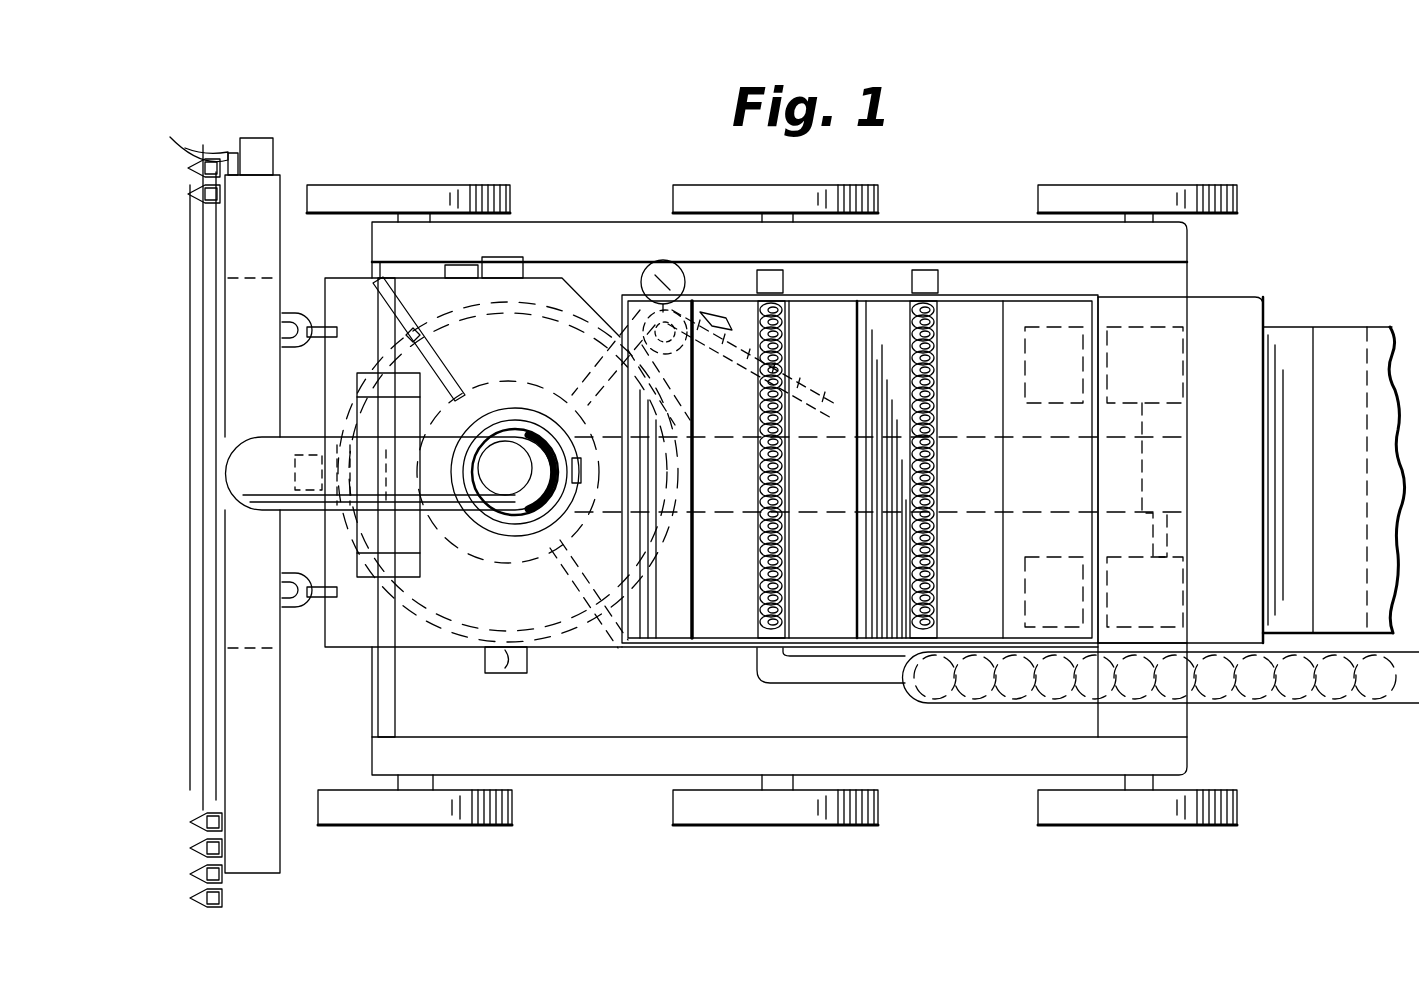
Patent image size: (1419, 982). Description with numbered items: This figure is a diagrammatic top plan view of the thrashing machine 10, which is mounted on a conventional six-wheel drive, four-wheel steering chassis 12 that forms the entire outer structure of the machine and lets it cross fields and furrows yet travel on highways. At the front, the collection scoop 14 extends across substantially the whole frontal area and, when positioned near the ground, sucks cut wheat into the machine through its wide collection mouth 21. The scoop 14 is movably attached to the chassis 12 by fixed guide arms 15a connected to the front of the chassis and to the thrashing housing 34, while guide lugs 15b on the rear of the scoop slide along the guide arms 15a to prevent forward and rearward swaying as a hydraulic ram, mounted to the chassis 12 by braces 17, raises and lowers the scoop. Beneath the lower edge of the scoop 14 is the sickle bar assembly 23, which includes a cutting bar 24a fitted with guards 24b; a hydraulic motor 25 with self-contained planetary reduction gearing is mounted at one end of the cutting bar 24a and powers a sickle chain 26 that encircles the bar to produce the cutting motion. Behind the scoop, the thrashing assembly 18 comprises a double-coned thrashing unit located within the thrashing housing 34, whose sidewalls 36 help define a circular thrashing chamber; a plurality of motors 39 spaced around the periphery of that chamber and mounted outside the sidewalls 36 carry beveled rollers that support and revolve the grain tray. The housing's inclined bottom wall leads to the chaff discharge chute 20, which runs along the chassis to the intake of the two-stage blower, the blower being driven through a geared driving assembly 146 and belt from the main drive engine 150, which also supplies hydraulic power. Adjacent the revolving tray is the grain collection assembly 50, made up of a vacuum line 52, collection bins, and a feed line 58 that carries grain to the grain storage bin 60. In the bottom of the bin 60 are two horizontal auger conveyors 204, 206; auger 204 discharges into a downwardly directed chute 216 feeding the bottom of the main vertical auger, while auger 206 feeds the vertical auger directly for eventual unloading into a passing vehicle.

The thrashing machine 10 is at (1200, 164).
The chassis 12 is at (932, 232).
The collection scoop 14 is at (232, 470).
The guide arms 15a is at (305, 608).
The guide lugs 15b is at (296, 314).
The braces 17 is at (377, 313).
The thrashing assembly 18 is at (408, 634).
The chaff discharge chute 20 is at (836, 518).
The collection mouth 21 is at (280, 857).
The sickle bar assembly 23 is at (210, 116).
The cutting bar 24a is at (233, 152).
The guards 24b is at (200, 152).
The hydraulic motor 25 is at (283, 134).
The sickle chain 26 is at (222, 173).
The thrashing housing 34 is at (577, 649).
The sidewalls 36 is at (534, 320).
The motors 39 is at (510, 268).
The grain collection assembly 50 is at (740, 248).
The vacuum line 52 is at (611, 300).
The feed line 58 is at (790, 380).
The grain storage bin 60 is at (705, 650).
The geared driving assembly 146 is at (1170, 422).
The main drive engine 150 is at (1064, 524).
The horizontal auger conveyor 204 is at (784, 603).
The horizontal auger conveyor 206 is at (938, 590).
The downwardly directed chute 216 is at (822, 684).